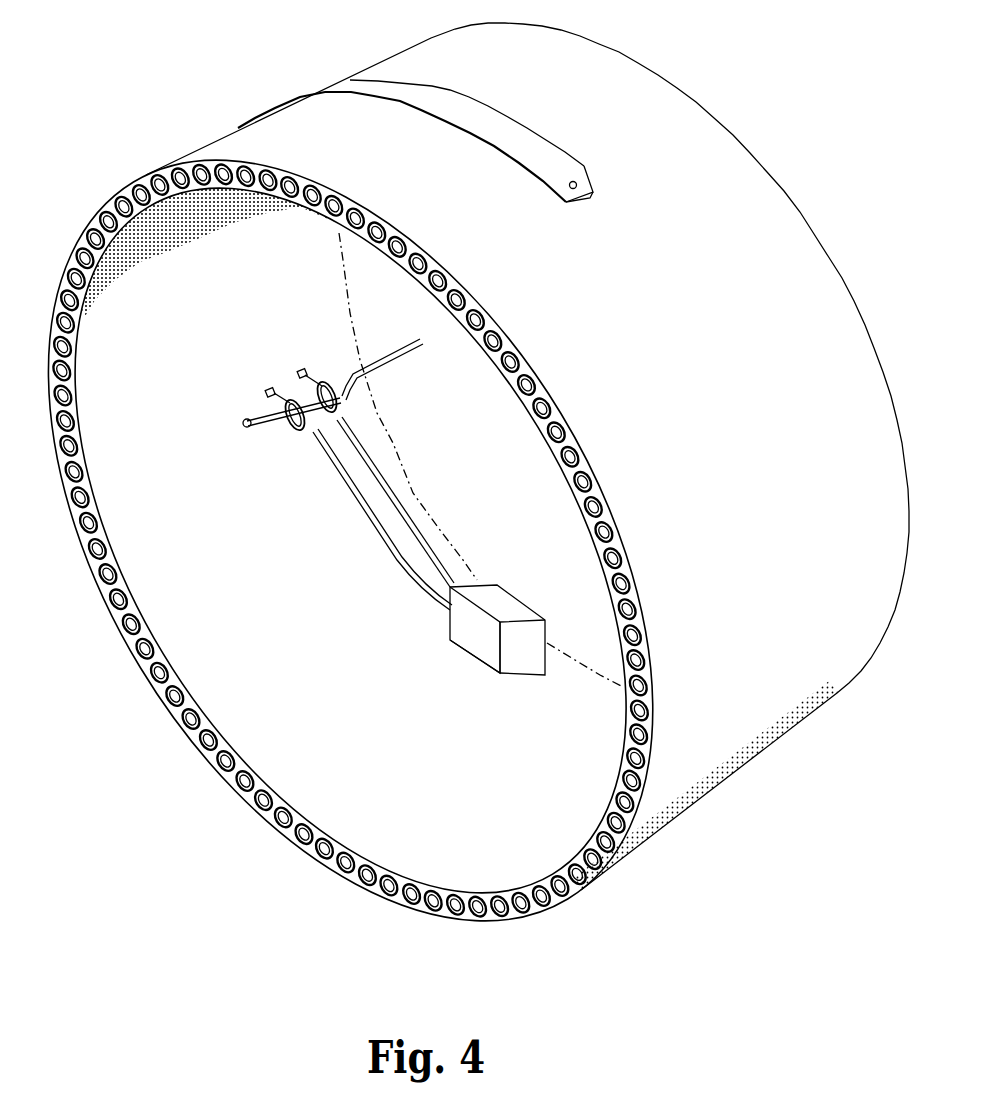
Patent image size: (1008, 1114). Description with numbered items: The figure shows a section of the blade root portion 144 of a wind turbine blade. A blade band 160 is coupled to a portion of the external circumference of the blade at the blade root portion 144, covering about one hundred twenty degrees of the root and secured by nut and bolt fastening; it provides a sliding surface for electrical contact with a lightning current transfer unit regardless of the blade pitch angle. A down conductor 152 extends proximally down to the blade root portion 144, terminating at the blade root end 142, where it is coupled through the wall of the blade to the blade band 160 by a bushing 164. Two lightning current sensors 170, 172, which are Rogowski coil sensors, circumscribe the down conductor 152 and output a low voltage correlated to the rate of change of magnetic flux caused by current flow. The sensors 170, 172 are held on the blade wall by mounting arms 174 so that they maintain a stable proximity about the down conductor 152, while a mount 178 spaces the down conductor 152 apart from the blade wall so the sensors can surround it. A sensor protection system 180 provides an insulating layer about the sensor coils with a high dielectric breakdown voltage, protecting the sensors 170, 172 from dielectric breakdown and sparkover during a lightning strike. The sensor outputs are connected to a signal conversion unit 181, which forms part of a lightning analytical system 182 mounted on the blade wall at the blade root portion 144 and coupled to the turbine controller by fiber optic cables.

The blade root end 142 is at (467, 917).
The blade root portion 144 is at (796, 126).
The down conductor 152 is at (422, 345).
The blade band 160 is at (561, 176).
The bushing 164 is at (243, 423).
The lightning current sensor 170 is at (297, 430).
The lightning current sensor 172 is at (343, 400).
The mounting arm 174 is at (307, 373).
The mount 178 is at (327, 455).
The sensor protection system 180 is at (345, 438).
The signal conversion unit 181 is at (463, 595).
The lightning analytical system 182 is at (478, 655).